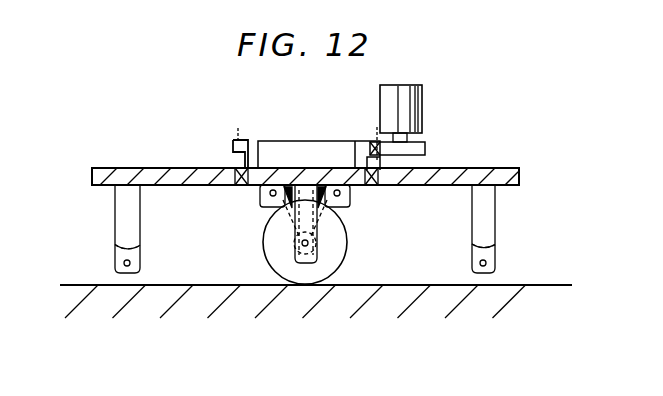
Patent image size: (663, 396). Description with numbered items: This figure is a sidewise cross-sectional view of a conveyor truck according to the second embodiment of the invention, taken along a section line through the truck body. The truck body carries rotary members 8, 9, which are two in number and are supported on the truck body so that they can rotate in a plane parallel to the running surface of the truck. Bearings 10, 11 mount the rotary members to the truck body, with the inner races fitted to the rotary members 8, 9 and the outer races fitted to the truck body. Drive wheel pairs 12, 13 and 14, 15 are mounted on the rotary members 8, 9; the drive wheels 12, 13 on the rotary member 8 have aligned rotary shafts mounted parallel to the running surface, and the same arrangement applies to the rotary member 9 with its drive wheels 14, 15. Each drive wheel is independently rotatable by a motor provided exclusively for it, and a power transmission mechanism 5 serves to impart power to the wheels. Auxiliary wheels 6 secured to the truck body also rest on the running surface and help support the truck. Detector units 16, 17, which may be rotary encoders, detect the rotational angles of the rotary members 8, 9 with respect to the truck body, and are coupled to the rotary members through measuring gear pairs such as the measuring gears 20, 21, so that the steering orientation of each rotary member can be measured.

The power transmission mechanism 5 is at (265, 207).
The auxiliary wheels 6 is at (140, 268).
The rotary member 8 is at (305, 131).
The rotary member 9 is at (335, 170).
The bearing 10 is at (218, 131).
The bearing 11 is at (237, 170).
The drive wheel 12 is at (340, 276).
The drive wheel 13 is at (340, 276).
The drive wheel 14 is at (340, 276).
The drive wheel 15 is at (325, 283).
The detector unit 16 is at (438, 102).
The detector unit 17 is at (422, 100).
The measuring gear 20 is at (249, 142).
The measuring gear 21 is at (427, 150).